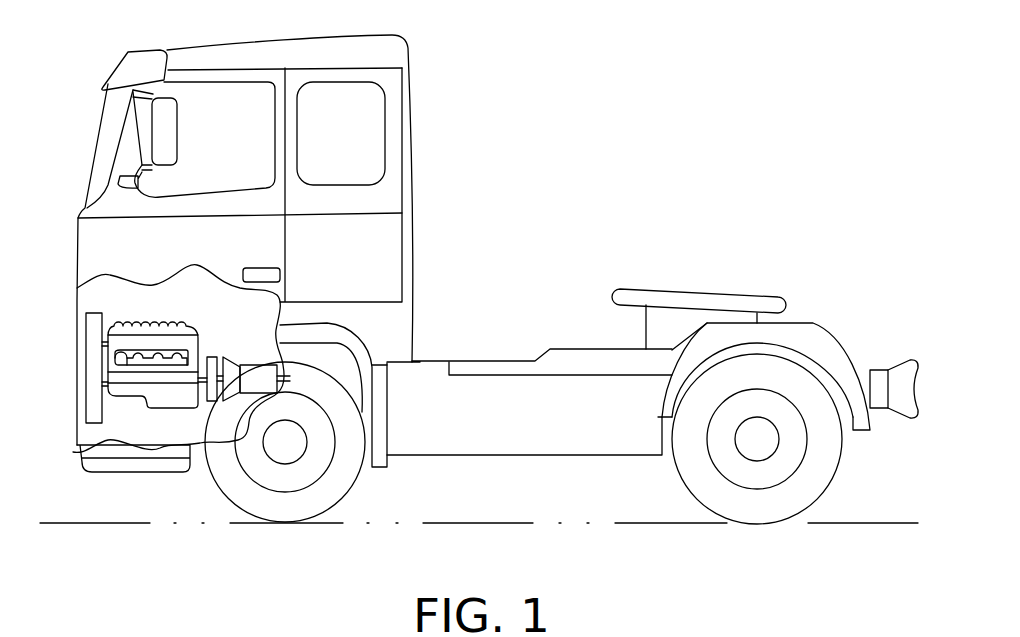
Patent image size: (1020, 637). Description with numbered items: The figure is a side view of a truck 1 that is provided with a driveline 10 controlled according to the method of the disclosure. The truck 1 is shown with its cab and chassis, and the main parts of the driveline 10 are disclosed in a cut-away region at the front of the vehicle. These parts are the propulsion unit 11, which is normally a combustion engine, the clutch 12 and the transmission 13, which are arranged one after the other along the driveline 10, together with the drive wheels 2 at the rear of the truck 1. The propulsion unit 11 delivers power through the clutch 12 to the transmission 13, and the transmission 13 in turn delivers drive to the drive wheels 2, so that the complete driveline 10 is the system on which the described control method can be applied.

The truck 1 is at (563, 70).
The drive wheels 2 is at (758, 505).
The driveline 10 is at (214, 313).
The propulsion unit 11 is at (141, 420).
The clutch 12 is at (203, 400).
The transmission 13 is at (268, 392).